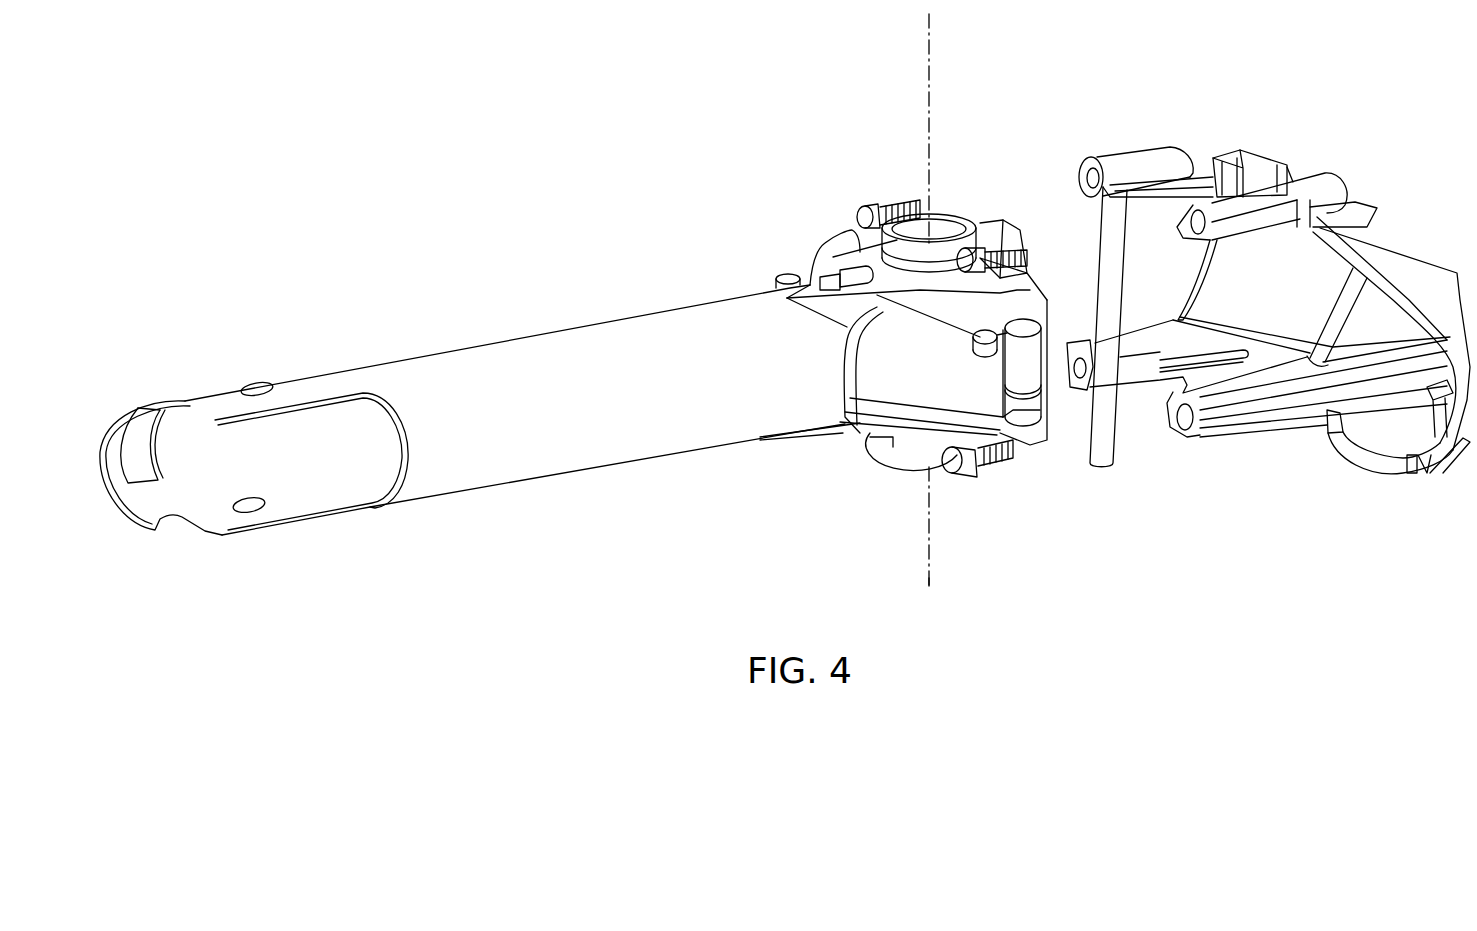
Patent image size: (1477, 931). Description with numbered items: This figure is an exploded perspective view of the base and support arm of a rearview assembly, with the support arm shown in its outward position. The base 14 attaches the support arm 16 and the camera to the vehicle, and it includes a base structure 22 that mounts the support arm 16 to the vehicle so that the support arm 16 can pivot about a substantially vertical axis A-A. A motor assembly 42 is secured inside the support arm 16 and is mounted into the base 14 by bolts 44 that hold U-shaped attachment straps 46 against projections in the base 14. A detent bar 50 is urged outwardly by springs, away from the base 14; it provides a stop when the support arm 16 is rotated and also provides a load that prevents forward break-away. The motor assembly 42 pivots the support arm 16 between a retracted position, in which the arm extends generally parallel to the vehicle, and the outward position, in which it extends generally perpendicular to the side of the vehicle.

The base 14 is at (1375, 483).
The support arm 16 is at (528, 355).
The base structure 22 is at (1137, 152).
The motor assembly 42 is at (857, 467).
The bolts 44 is at (853, 212).
The U-shaped attachment straps 46 is at (917, 252).
The detent bar 50 is at (1083, 440).
The substantially vertical axis A is at (928, 78).